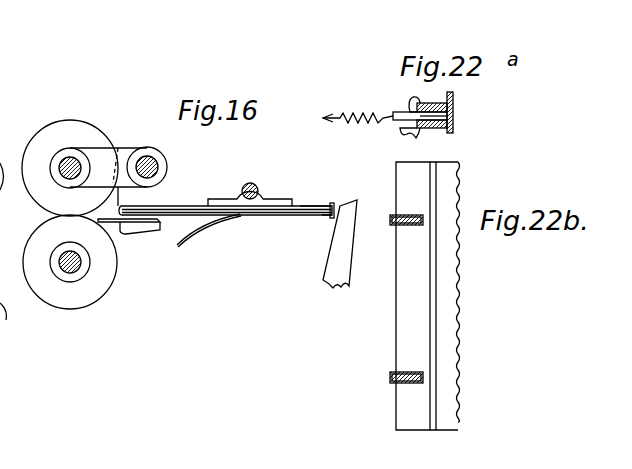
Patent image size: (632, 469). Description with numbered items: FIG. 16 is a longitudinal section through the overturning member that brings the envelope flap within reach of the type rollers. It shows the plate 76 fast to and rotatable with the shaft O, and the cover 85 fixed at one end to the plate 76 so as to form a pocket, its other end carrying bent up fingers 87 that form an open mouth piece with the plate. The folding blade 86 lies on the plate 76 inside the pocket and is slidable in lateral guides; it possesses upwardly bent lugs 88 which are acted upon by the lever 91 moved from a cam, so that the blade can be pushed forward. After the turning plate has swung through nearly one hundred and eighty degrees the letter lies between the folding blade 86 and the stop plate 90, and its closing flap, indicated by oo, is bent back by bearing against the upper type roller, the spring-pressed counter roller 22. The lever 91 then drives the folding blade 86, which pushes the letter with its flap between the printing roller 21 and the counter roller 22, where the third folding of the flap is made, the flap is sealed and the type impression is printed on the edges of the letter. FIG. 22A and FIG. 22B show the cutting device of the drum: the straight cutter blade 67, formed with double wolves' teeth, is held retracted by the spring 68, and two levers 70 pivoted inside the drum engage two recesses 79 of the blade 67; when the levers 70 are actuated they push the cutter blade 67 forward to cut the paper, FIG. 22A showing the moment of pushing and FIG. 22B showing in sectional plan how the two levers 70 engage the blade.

In FIG. 16, the counter roller 22 is at (48, 128).
In FIG. 16, the printing roller 21 is at (42, 224).
In FIG. 16, the closing flap oo is at (120, 196).
In FIG. 16, the folding blade 86 is at (178, 214).
In FIG. 16, the stop plate 90 is at (118, 223).
In FIG. 16, the cover 85 is at (248, 219).
In FIG. 16, the shaft O is at (264, 187).
In FIG. 16, the plate 76 is at (313, 206).
In FIG. 16, the bent up fingers 87 is at (333, 205).
In FIG. 16, the upwardly bent lugs 88 is at (333, 218).
In FIG. 16, the lever 91 is at (327, 268).
In FIG. 22A, the spring 68 is at (361, 112).
In FIG. 22A, the lever 70 is at (400, 138).
In FIG. 22B, the lever 70 is at (389, 224).
In FIG. 22A, the cutter blade 67 is at (457, 116).
In FIG. 22B, the cutter blade 67 is at (460, 279).
In FIG. 22B, the recesses 79 is at (412, 215).